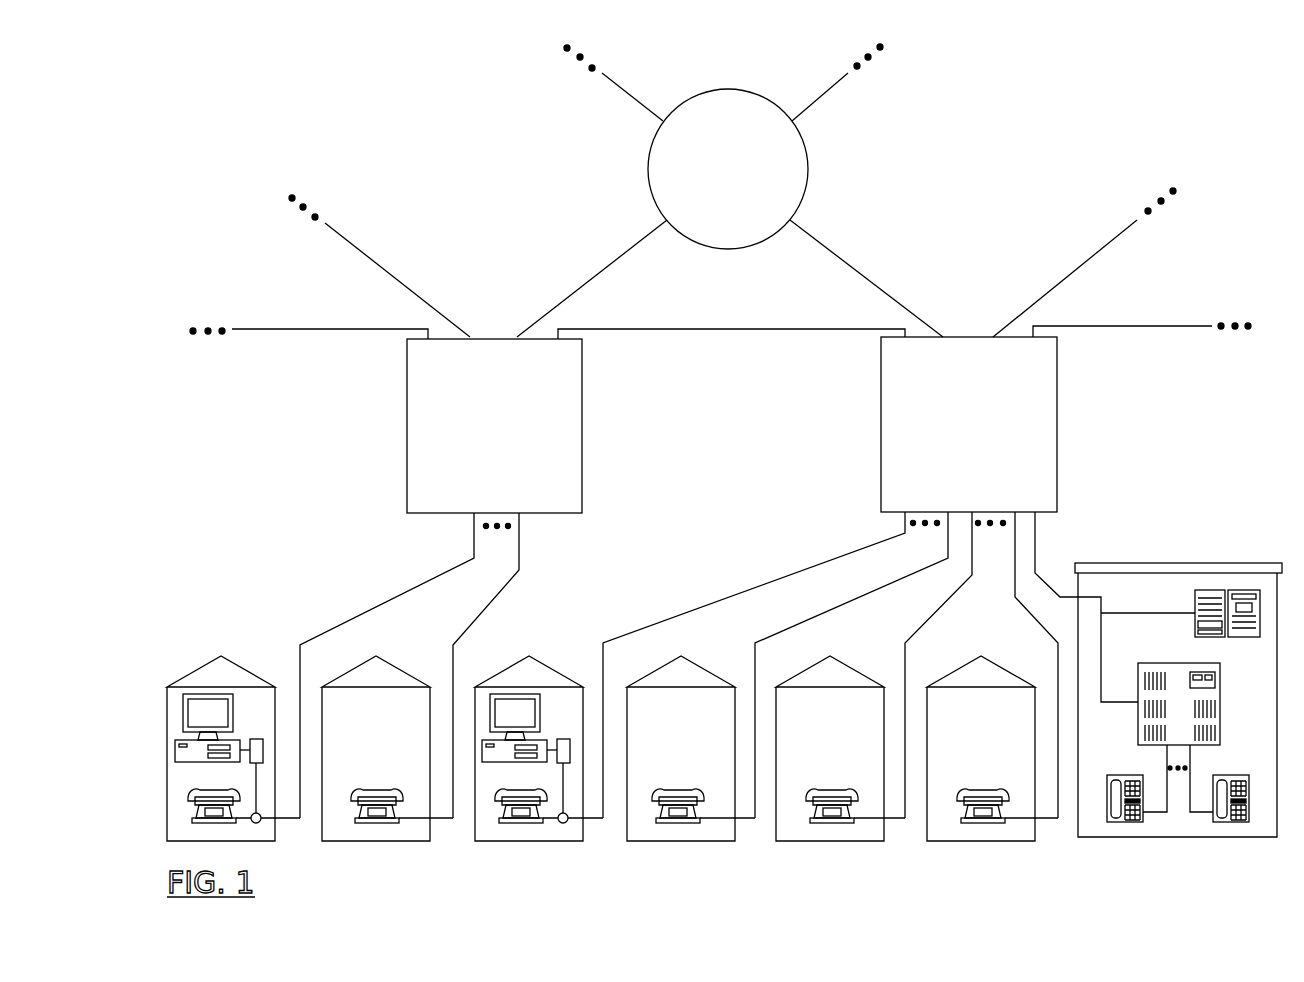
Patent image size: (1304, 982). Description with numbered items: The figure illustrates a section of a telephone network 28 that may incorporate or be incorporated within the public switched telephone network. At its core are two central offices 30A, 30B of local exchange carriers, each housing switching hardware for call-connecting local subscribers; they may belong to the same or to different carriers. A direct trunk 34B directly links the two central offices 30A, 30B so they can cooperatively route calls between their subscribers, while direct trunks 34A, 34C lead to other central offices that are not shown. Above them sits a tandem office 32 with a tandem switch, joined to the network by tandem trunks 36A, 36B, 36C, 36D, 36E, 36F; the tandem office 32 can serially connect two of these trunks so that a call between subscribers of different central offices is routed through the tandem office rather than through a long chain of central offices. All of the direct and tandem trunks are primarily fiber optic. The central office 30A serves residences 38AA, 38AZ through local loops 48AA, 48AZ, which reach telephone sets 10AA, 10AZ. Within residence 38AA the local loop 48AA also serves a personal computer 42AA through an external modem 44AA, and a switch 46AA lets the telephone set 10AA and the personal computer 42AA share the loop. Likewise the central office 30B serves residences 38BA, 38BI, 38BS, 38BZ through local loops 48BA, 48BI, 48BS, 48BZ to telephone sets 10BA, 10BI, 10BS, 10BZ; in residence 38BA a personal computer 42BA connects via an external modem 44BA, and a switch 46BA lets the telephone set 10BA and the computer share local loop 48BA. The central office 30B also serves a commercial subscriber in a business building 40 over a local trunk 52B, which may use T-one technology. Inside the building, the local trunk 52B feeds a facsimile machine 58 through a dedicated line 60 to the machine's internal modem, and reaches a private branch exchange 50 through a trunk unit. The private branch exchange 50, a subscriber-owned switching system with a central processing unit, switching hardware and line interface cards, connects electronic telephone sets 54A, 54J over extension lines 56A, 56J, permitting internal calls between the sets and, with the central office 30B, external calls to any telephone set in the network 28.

The telephone network 28 is at (398, 107).
The tandem office 32 is at (651, 148).
The tandem trunk 36A is at (406, 278).
The tandem trunk 36B is at (557, 303).
The tandem trunk 36C is at (643, 98).
The tandem trunk 36D is at (800, 98).
The tandem trunk 36E is at (887, 292).
The tandem trunk 36F is at (1047, 293).
The direct trunk 34A is at (293, 328).
The direct trunk 34B is at (730, 327).
The direct trunk 34C is at (1147, 326).
The central office 30A is at (407, 431).
The central office 30B is at (881, 436).
The local loop 48AA is at (390, 602).
The local loop 48AZ is at (519, 557).
The local loop 48BA is at (750, 590).
The local loop 48BI is at (812, 618).
The local loop 48BS is at (918, 630).
The local loop 48BZ is at (1015, 575).
The local trunk 52B is at (1037, 530).
The business building 40 is at (1200, 563).
The residence 38AA is at (222, 655).
The residence 38AZ is at (396, 668).
The residence 38BA is at (536, 655).
The residence 38BI is at (708, 672).
The residence 38BS is at (856, 671).
The residence 38BZ is at (1007, 670).
The personal computer 42AA is at (207, 694).
The external modem 44AA is at (256, 736).
The personal computer 42BA is at (514, 694).
The external modem 44BA is at (563, 736).
The telephone set 10AA is at (236, 790).
The telephone set 10AZ is at (376, 785).
The telephone set 10BA is at (543, 790).
The telephone set 10BI is at (672, 785).
The telephone set 10BS is at (828, 784).
The telephone set 10BZ is at (983, 784).
The switch 46AA is at (256, 823).
The switch 46BA is at (563, 823).
The facsimile machine 58 is at (1195, 594).
The dedicated line 60 is at (1110, 615).
The private branch exchange 50 is at (1220, 724).
The extension line 56A is at (1167, 758).
The extension line 56J is at (1190, 758).
The electronic telephone set 54A is at (1125, 822).
The electronic telephone set 54J is at (1232, 822).